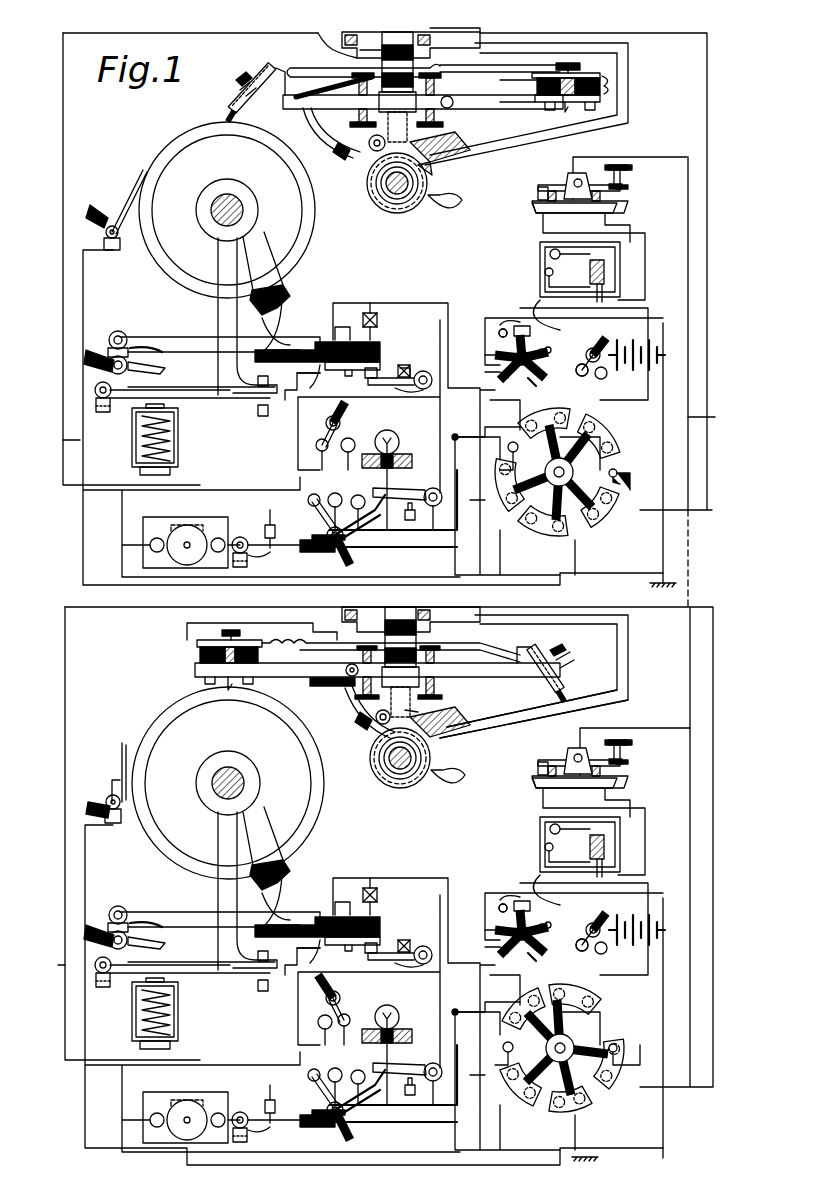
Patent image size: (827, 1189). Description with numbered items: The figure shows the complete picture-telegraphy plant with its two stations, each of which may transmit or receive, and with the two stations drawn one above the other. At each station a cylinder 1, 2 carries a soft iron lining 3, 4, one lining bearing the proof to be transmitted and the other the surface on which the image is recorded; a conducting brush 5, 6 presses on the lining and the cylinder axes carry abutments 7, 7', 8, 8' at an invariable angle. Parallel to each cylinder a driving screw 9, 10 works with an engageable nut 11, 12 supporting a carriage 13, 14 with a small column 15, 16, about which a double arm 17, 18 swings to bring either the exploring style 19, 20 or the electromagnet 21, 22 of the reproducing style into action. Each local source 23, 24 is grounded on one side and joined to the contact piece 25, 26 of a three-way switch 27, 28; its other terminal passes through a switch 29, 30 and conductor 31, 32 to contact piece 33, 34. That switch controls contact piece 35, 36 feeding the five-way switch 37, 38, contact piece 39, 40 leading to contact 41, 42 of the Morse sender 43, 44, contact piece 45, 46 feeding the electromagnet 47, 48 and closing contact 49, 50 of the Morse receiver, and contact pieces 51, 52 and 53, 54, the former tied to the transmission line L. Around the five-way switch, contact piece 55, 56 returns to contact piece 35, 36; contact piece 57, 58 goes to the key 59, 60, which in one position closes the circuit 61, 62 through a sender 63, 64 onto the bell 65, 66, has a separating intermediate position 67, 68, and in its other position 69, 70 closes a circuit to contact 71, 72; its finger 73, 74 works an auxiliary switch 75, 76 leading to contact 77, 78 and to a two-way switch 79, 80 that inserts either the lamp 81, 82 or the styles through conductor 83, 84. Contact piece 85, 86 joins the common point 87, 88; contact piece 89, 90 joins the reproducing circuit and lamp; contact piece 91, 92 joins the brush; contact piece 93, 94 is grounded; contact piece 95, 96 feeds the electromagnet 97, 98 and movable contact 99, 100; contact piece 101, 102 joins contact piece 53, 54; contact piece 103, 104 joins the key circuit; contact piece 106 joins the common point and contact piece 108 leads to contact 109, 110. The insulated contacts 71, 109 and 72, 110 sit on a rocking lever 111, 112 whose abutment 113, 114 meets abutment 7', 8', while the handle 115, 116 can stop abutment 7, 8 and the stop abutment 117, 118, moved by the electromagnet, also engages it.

The cylinder 1 is at (192, 165).
The cylinder 2 is at (190, 735).
The soft iron lining 3 is at (302, 246).
The soft iron lining 4 is at (303, 748).
The conducting brush 5 is at (135, 180).
The conducting brush 6 is at (120, 756).
The abutment 7 is at (234, 316).
The abutment 7' is at (277, 273).
The abutment 8 is at (233, 891).
The abutment 8' is at (266, 848).
The driving screw 9 is at (386, 182).
The driving screw 10 is at (389, 758).
The nut 11 is at (428, 182).
The nut 12 is at (432, 760).
The carriage 13 is at (448, 138).
The carriage 14 is at (458, 708).
The small column 15 is at (395, 125).
The small column 16 is at (415, 702).
The double arm 17 is at (438, 96).
The double arm 18 is at (448, 678).
The exploring style 19 is at (243, 100).
The exploring style 20 is at (566, 676).
The electromagnet 21 is at (548, 96).
The electromagnet 22 is at (200, 650).
The local source 23 is at (637, 363).
The local source 24 is at (637, 939).
The contact piece 25 is at (515, 330).
The contact piece 26 is at (515, 905).
The three-way switch 27 is at (540, 350).
The three-way switch 28 is at (540, 925).
The switch 29 is at (606, 338).
The switch 30 is at (606, 913).
The conductor 31 is at (560, 372).
The conductor 32 is at (552, 925).
The contact piece 33 is at (552, 350).
The contact piece 34 is at (570, 932).
The contact piece 35 is at (530, 378).
The contact piece 36 is at (530, 953).
The five-way switch 37 is at (553, 472).
The five-way switch 38 is at (567, 1047).
The contact piece 39 is at (545, 300).
The contact piece 40 is at (540, 876).
The contact 41 is at (620, 190).
The contact 42 is at (620, 765).
The Morse sender 43 is at (592, 185).
The Morse sender 44 is at (585, 752).
The contact piece 45 is at (498, 333).
The contact piece 46 is at (498, 908).
The electromagnet 47 is at (600, 278).
The electromagnet 48 is at (600, 850).
The closing contact 49 is at (540, 193).
The closing contact 50 is at (540, 768).
The contact piece 51 is at (483, 355).
The contact piece 52 is at (483, 928).
The contact piece 53 is at (483, 372).
The contact piece 54 is at (483, 946).
The contact piece 55 is at (594, 424).
The contact piece 56 is at (594, 1000).
The contact piece 57 is at (612, 449).
The contact piece 58 is at (616, 1044).
The key 59 is at (330, 540).
The key 60 is at (331, 1116).
The circuit 61 is at (270, 492).
The circuit 62 is at (272, 1092).
The sender 63 is at (272, 556).
The sender 64 is at (272, 1130).
The bell 65 is at (190, 525).
The bell 66 is at (200, 1098).
The intermediate position 67 is at (336, 493).
The intermediate position 68 is at (340, 1102).
The position 69 is at (358, 540).
The position 70 is at (333, 1068).
The contact 71 is at (338, 366).
The contact 72 is at (338, 945).
The finger 73 is at (328, 514).
The finger 74 is at (358, 1115).
The auxiliary switch 75 is at (435, 506).
The auxiliary switch 76 is at (438, 1080).
The contact 77 is at (374, 312).
The contact 78 is at (376, 888).
The two-way switch 79 is at (326, 422).
The two-way switch 80 is at (340, 997).
The lamp 81 is at (390, 432).
The lamp 82 is at (390, 1006).
The conductor 83 is at (80, 438).
The conductor 84 is at (58, 965).
The contact piece 85 is at (622, 483).
The contact piece 86 is at (622, 1060).
The common point 87 is at (470, 418).
The common point 88 is at (470, 995).
The contact piece 89 is at (606, 504).
The contact piece 90 is at (606, 1082).
The contact piece 91 is at (564, 527).
The contact piece 92 is at (580, 1104).
The contact piece 93 is at (526, 520).
The contact piece 94 is at (553, 1104).
The contact piece 95 is at (506, 496).
The contact piece 96 is at (507, 1074).
The electromagnet 97 is at (178, 432).
The electromagnet 98 is at (178, 1006).
The movable contact 99 is at (404, 368).
The movable contact 100 is at (405, 945).
The contact piece 101 is at (508, 448).
The contact piece 102 is at (505, 1043).
The contact piece 103 is at (518, 438).
The contact piece 104 is at (512, 1012).
The contact piece 106 is at (534, 1006).
The contact piece 108 is at (578, 978).
The contact 109 is at (348, 328).
The contact 110 is at (348, 903).
The rocking lever 111 is at (178, 337).
The rocking lever 112 is at (168, 912).
The abutment 113 is at (288, 332).
The abutment 114 is at (290, 905).
The handle 115 is at (168, 366).
The handle 116 is at (166, 944).
The stop abutment 117 is at (240, 392).
The stop abutment 118 is at (238, 970).
The transmission line L is at (708, 416).